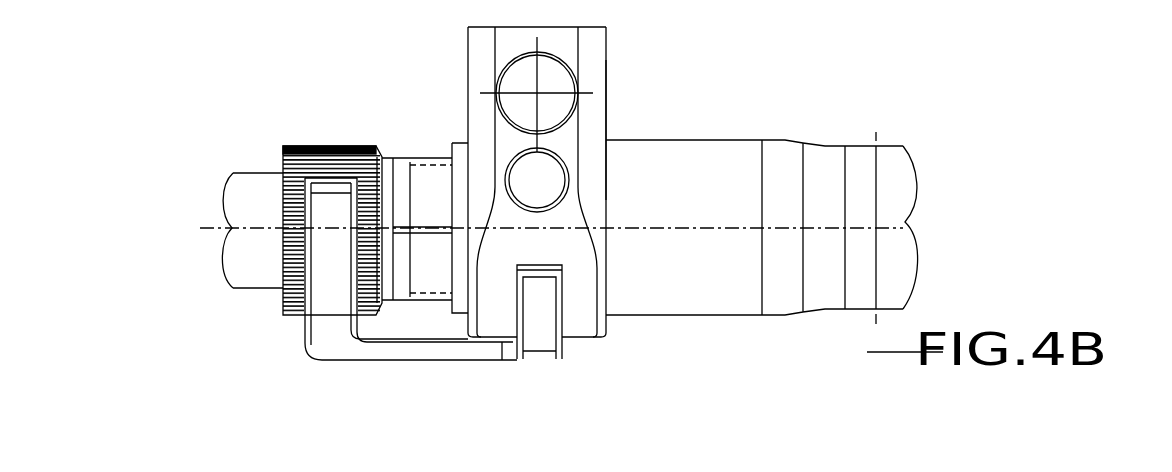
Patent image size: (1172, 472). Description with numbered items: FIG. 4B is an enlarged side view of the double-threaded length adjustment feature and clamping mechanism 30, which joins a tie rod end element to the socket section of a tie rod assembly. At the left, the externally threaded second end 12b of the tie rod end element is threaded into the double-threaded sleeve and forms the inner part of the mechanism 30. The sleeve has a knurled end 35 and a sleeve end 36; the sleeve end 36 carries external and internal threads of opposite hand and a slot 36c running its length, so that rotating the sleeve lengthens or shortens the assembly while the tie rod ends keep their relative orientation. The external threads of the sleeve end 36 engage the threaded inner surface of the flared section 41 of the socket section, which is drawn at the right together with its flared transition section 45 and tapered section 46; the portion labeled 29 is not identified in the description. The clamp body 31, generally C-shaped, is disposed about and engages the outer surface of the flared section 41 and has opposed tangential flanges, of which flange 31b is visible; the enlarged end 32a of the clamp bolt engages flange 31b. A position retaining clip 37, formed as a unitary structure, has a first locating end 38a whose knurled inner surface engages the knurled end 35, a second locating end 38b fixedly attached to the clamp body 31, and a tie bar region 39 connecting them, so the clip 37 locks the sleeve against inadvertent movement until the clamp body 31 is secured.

The second end of the tie rod end element 12b is at (248, 278).
The connector end section 29 is at (863, 145).
The double-threaded, length adjustment feature and clamping mechanism 30 is at (858, 187).
The clamp body 31 is at (536, 169).
The flange 31b is at (614, 63).
The enlarged end 32a is at (550, 72).
The knurled end 35 is at (358, 144).
The sleeve end 36 is at (414, 194).
The slot 36c is at (402, 225).
The position retaining clip 37 is at (393, 308).
The first locating end 38a is at (333, 208).
The second locating end 38b is at (538, 340).
The tie bar region 39 is at (425, 352).
The flared section 41 is at (720, 138).
The flared transition section 45 is at (785, 140).
The tapered section 46 is at (827, 140).